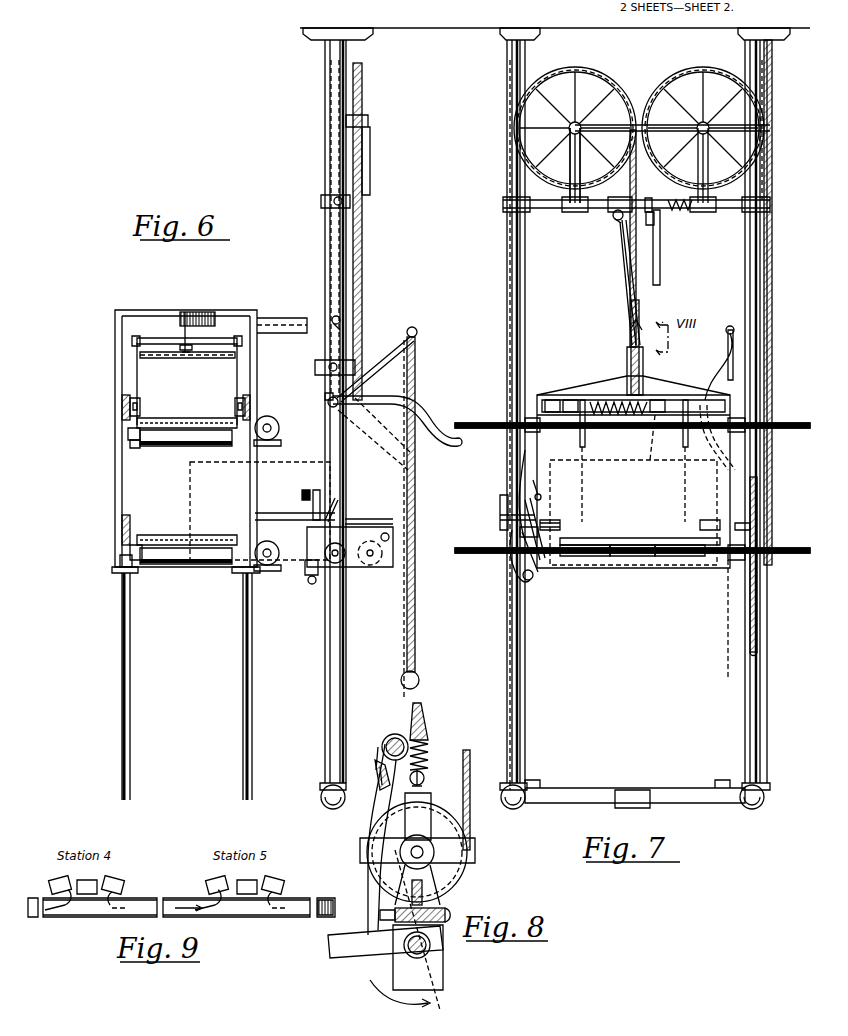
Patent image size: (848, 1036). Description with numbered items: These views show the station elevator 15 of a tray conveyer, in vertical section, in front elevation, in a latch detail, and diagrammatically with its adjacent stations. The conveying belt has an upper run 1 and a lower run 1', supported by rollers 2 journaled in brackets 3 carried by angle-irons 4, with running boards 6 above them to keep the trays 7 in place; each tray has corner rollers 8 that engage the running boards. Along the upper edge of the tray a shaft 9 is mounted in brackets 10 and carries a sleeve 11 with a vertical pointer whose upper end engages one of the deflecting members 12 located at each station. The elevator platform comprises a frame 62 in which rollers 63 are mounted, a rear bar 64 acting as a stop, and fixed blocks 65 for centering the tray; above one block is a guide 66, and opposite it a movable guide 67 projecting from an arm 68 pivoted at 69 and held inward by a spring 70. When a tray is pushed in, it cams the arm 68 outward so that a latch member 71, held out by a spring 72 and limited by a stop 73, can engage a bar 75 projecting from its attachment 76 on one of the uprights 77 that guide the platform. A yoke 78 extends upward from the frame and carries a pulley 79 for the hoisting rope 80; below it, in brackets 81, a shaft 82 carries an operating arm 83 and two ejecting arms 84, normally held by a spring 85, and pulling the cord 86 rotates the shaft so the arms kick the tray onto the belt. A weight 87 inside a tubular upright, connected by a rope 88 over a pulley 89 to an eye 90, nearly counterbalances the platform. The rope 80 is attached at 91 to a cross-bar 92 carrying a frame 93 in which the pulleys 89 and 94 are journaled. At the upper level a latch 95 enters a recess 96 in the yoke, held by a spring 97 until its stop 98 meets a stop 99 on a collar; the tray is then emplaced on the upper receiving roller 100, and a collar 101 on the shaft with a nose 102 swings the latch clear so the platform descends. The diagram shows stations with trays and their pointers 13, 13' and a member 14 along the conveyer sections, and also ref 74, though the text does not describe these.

In FIG. 6, the upper run of the conveying belt 1 is at (187, 413).
In FIG. 7, the upper run of the conveying belt 1 is at (632, 410).
In FIG. 9, the upper run of the conveying belt 1 is at (143, 921).
In FIG. 6, the lower run of the conveying belt 1' is at (187, 529).
In FIG. 7, the lower run of the conveying belt 1' is at (631, 536).
In FIG. 6, the rollers 2 is at (165, 446).
In FIG. 6, the brackets 3 is at (132, 445).
In FIG. 6, the angle-irons 4 is at (128, 434).
In FIG. 6, the running boards 6 is at (248, 396).
In FIG. 6, the trays 7 is at (138, 382).
In FIG. 6, the rollers 8 is at (128, 410).
In FIG. 6, the bar or shaft 9 is at (165, 338).
In FIG. 6, the brackets 10 is at (140, 354).
In FIG. 6, the sleeve or slide member 11 is at (182, 346).
In FIG. 6, the deflecting angles or members 12 is at (268, 318).
In FIG. 9, the deflecting angles or members 12 is at (65, 905).
In FIG. 9, the box 13 is at (129, 883).
In FIG. 9, the box 13' is at (205, 882).
In FIG. 6, the spring 14 is at (200, 313).
In FIG. 6, the elevator 15 is at (330, 500).
In FIG. 7, the elevator 15 is at (592, 446).
In FIG. 9, the elevator 15 is at (167, 878).
In FIG. 6, the frame 62 is at (383, 567).
In FIG. 7, the frame 62 is at (630, 556).
In FIG. 6, the rollers 63 is at (368, 566).
In FIG. 7, the rollers 63 is at (590, 556).
In FIG. 6, the bar 64 is at (390, 537).
In FIG. 7, the bar 64 is at (614, 538).
In FIG. 7, the fixed blocks 65 is at (556, 530).
In FIG. 7, the guide 66 is at (755, 512).
In FIG. 6, the movable guide or latch operating part 67 is at (375, 520).
In FIG. 7, the movable guide or latch operating part 67 is at (548, 523).
In FIG. 6, the arm or lever 68 is at (306, 570).
In FIG. 7, the arm or lever 68 is at (520, 533).
In FIG. 7, the pivot 69 is at (512, 565).
In FIG. 6, the spring 70 is at (311, 584).
In FIG. 7, the spring 70 is at (533, 578).
In FIG. 6, the latch member 71 is at (316, 491).
In FIG. 7, the latch member 71 is at (500, 500).
In FIG. 6, the spring 72 is at (304, 490).
In FIG. 7, the stop 73 is at (544, 483).
In FIG. 7, the pin 74 is at (543, 496).
In FIG. 6, the bar 75 is at (272, 513).
In FIG. 7, the bar 75 is at (500, 517).
In FIG. 6, the attachment 76 is at (340, 498).
In FIG. 7, the attachment 76 is at (505, 500).
In FIG. 6, the uprights 77 is at (325, 667).
In FIG. 7, the uprights 77 is at (506, 672).
In FIG. 6, the yoke or bail 78 is at (328, 402).
In FIG. 7, the yoke or bail 78 is at (578, 392).
In FIG. 6, the pulley 79 is at (316, 372).
In FIG. 8, the pulley 79 is at (425, 805).
In FIG. 7, the pulley 79 is at (626, 352).
In FIG. 6, the hoisting rope 80 is at (356, 288).
In FIG. 8, the hoisting rope 80 is at (470, 808).
In FIG. 7, the hoisting rope 80 is at (636, 290).
In FIG. 7, the brackets 81 is at (552, 413).
In FIG. 6, the shaft 82 is at (325, 400).
In FIG. 7, the shaft 82 is at (570, 413).
In FIG. 6, the operating arm 83 is at (368, 372).
In FIG. 7, the operating arm 83 is at (713, 365).
In FIG. 6, the ejecting arms 84 is at (432, 420).
In FIG. 8, the ejecting arms 84 is at (338, 948).
In FIG. 7, the ejecting arms 84 is at (585, 420).
In FIG. 8, the spring 85 is at (440, 910).
In FIG. 7, the spring 85 is at (622, 414).
In FIG. 6, the cord 86 is at (415, 372).
In FIG. 7, the weight 87 is at (520, 452).
In FIG. 8, the rope 88 is at (424, 716).
In FIG. 7, the rope 88 is at (628, 255).
In FIG. 7, the pulley 89 is at (600, 90).
In FIG. 6, the eye 90 is at (340, 320).
In FIG. 8, the eye 90 is at (424, 776).
In FIG. 7, the eye 90 is at (630, 335).
In FIG. 8, the attachment point 91 is at (378, 771).
In FIG. 7, the attachment point 91 is at (614, 218).
In FIG. 8, the cross-bar 92 is at (426, 744).
In FIG. 7, the cross-bar 92 is at (545, 212).
In FIG. 7, the frame 93 is at (570, 158).
In FIG. 7, the pulley 94 is at (680, 82).
In FIG. 8, the latch 95 is at (372, 876).
In FIG. 7, the latch 95 is at (660, 260).
In FIG. 8, the latching recess 96 is at (382, 912).
In FIG. 7, the latching recess 96 is at (652, 392).
In FIG. 8, the spring 97 is at (383, 742).
In FIG. 7, the spring 97 is at (684, 212).
In FIG. 8, the stop 98 is at (376, 768).
In FIG. 7, the stop 98 is at (650, 226).
In FIG. 7, the stop 99 is at (624, 240).
In FIG. 6, the upper receiving roller 100 is at (267, 416).
In FIG. 7, the upper receiving roller 100 is at (648, 198).
In FIG. 8, the collar 101 is at (430, 948).
In FIG. 7, the collar 101 is at (655, 420).
In FIG. 8, the nose-like projection 102 is at (440, 910).